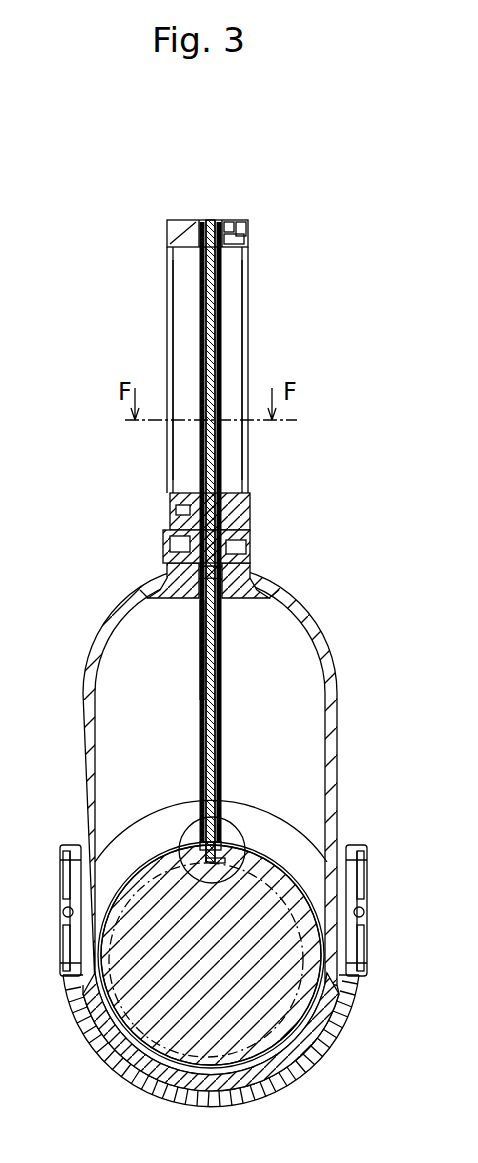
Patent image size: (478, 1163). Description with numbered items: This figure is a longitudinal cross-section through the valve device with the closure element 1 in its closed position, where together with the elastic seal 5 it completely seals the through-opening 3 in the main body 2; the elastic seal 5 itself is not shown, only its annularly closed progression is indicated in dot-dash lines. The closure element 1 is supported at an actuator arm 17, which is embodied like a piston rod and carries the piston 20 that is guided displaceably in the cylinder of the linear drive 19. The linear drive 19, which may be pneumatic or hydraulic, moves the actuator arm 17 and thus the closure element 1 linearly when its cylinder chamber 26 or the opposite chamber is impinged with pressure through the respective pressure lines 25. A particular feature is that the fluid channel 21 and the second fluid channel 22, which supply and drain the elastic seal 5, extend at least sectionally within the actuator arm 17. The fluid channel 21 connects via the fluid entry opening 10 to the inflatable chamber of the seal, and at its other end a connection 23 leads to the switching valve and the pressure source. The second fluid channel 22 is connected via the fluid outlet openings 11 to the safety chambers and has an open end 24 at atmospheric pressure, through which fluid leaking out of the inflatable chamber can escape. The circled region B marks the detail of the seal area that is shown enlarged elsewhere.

The closure element 1 is at (267, 998).
The main body 2 is at (300, 845).
The through-opening 3 is at (282, 988).
The elastic seal 5 is at (113, 1063).
The fluid entry opening 10 is at (204, 866).
The fluid outlet opening 11 is at (238, 858).
The actuator arm 17 is at (221, 638).
The linear drive 19 is at (253, 364).
The piston 20 is at (236, 505).
The fluid channel 21 is at (202, 655).
The second fluid channel 22 is at (221, 668).
The connection 23 is at (201, 206).
The open end 24 is at (220, 210).
The pressure line 25 is at (236, 212).
The cylinder chamber 26 is at (233, 312).
The detail circle B is at (238, 828).